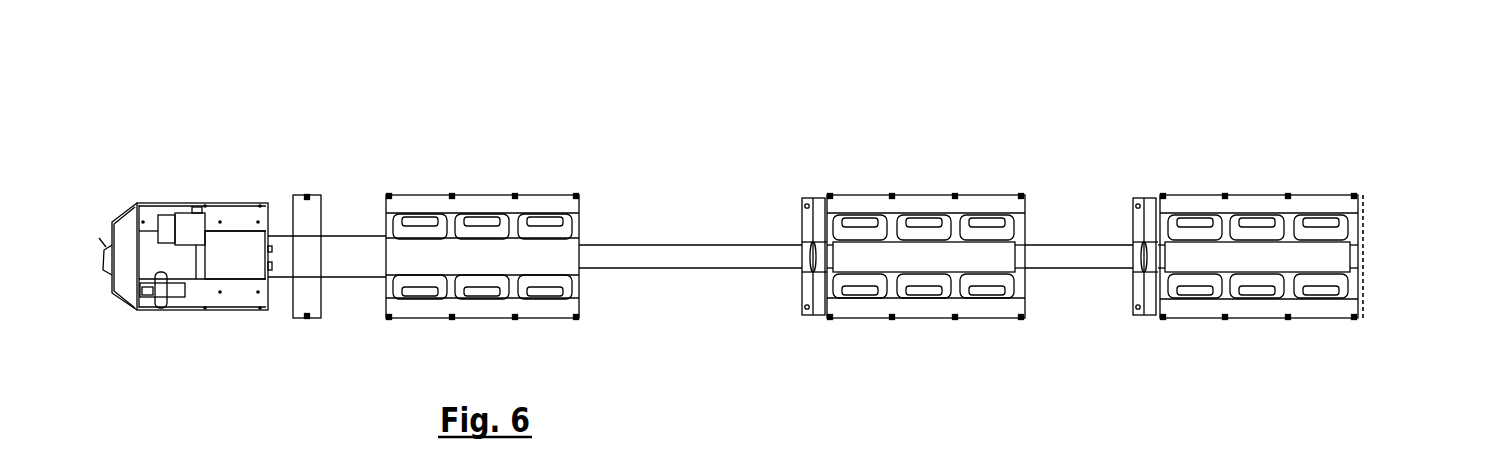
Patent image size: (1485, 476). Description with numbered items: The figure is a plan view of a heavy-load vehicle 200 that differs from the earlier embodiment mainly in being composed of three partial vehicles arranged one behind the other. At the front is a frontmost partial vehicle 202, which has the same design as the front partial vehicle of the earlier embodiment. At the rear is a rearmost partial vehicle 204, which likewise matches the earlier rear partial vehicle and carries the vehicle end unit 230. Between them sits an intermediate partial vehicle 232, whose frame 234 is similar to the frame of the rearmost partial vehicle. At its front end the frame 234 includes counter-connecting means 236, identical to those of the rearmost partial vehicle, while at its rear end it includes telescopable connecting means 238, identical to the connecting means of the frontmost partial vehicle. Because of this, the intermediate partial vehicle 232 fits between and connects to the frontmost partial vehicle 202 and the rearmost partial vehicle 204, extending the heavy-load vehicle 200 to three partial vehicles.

The heavy-load vehicle 200 is at (284, 127).
The frontmost partial vehicle 202 is at (458, 210).
The rearmost partial vehicle 204 is at (1282, 208).
The vehicle end unit 230 is at (1365, 238).
The intermediate partial vehicle 232 is at (854, 210).
The frame 234 is at (942, 208).
The counter-connecting means 236 is at (822, 300).
The telescopable connecting means 238 is at (1072, 257).